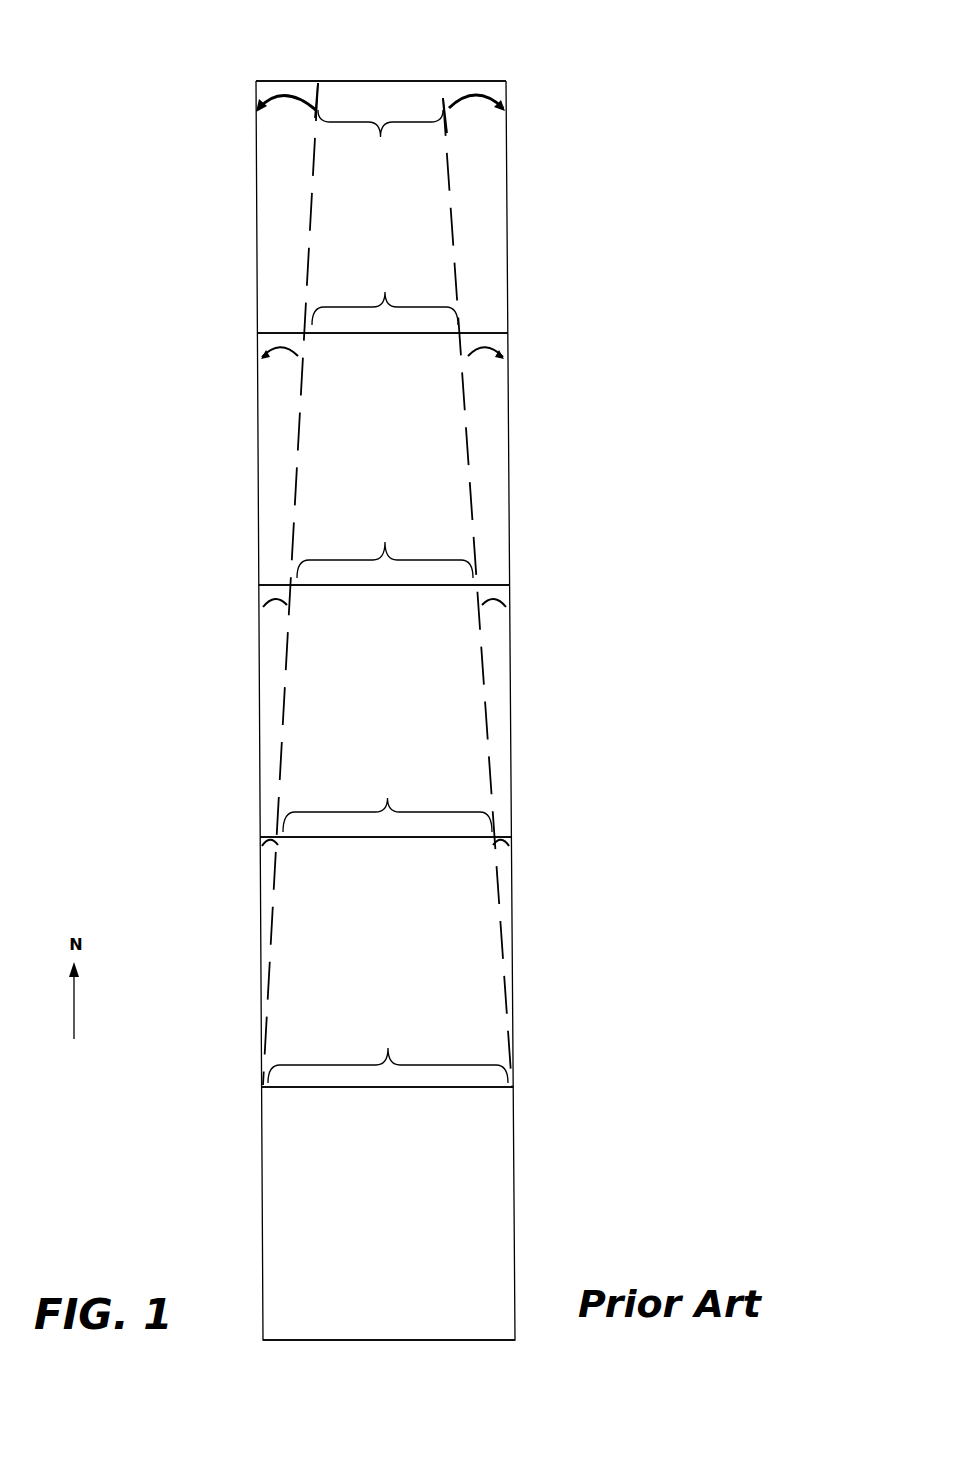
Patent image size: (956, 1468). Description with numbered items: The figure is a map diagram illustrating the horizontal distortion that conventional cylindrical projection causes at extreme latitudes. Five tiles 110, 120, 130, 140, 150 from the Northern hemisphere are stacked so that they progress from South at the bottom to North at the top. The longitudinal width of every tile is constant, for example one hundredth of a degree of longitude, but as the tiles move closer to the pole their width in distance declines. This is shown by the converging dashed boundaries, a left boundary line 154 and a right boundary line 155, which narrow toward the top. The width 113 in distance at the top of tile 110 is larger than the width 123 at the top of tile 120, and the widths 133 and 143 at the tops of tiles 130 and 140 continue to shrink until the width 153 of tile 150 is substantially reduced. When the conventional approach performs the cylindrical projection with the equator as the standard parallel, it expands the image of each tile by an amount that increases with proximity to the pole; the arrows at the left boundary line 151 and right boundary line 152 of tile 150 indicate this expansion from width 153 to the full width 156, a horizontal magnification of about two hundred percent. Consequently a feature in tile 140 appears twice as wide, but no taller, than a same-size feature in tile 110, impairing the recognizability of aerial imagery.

The tile 110 is at (255, 1088).
The width 113 is at (388, 1051).
The tile 120 is at (252, 840).
The width 123 is at (387, 800).
The tile 130 is at (250, 590).
The width 133 is at (385, 547).
The tile 140 is at (249, 337).
The width 143 is at (385, 295).
The tile 150 is at (248, 85).
The left boundary line 151 is at (312, 167).
The right boundary line 152 is at (452, 172).
The width 153 is at (380, 139).
The left boundary line 154 is at (257, 250).
The right boundary line 155 is at (506, 258).
The width 156 is at (506, 72).